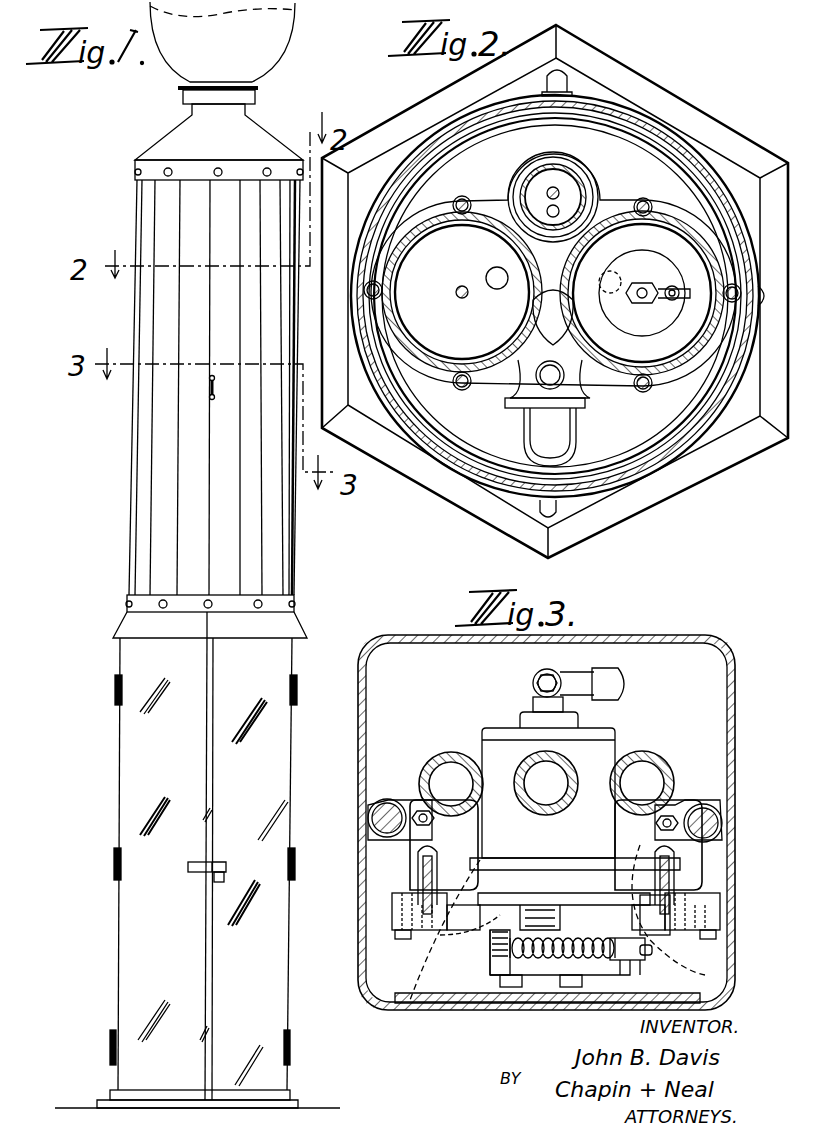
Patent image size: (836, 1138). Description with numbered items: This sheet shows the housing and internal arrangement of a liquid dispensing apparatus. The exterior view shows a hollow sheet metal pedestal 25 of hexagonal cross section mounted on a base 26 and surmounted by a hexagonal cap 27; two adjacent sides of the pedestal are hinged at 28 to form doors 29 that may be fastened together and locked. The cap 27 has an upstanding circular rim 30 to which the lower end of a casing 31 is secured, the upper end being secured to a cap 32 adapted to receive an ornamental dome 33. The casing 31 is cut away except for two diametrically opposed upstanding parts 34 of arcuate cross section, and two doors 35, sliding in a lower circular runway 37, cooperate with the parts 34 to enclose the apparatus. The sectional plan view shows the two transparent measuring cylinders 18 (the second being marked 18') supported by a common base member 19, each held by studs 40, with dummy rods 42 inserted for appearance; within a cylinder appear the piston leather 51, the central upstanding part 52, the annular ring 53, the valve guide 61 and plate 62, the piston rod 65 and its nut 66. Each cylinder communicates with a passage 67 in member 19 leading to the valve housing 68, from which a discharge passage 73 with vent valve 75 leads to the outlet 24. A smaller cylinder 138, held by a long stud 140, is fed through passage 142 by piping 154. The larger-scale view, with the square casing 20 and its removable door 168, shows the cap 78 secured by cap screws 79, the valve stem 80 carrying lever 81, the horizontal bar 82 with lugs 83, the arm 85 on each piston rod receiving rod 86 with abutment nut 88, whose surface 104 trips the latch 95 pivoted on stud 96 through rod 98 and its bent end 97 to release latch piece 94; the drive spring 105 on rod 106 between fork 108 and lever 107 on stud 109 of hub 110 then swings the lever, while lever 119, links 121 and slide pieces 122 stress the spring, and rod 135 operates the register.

In FIG. 2, the transparent measuring cylinder 18 is at (462, 292).
In FIG. 2, the right dial 18' is at (642, 277).
In FIG. 2, the base member 19 is at (490, 200).
In FIG. 3, the casing 20 is at (358, 968).
In FIG. 2, the outlet fitting 24 is at (575, 440).
In FIG. 1, the pedestal 25 is at (112, 791).
In FIG. 1, the base 26 is at (103, 1100).
In FIG. 1, the hexagonal cap 27 is at (133, 625).
In FIG. 2, the hexagonal cap 27 is at (452, 480).
In FIG. 1, the hinge 28 is at (116, 688).
In FIG. 1, the door 29 is at (213, 869).
In FIG. 2, the circular rim 30 is at (668, 480).
In FIG. 2, the casing 31 is at (632, 500).
In FIG. 1, the cap 32 is at (262, 132).
In FIG. 1, the ornamental dome 33 is at (297, 42).
In FIG. 2, the upstanding part 34 is at (398, 165).
In FIG. 1, the sliding door 35 is at (160, 460).
In FIG. 2, the sliding door 35 is at (598, 100).
In FIG. 2, the lower circular runway 37 is at (708, 465).
In FIG. 2, the stud 40 is at (460, 198).
In FIG. 2, the dummy rod 42 is at (382, 292).
In FIG. 2, the piston leather 51 is at (694, 292).
In FIG. 2, the central upstanding cylindrical part 52 is at (642, 293).
In FIG. 2, the annular ring 53 is at (648, 256).
In FIG. 2, the valve guide 61 is at (672, 300).
In FIG. 2, the plate 62 is at (647, 303).
In FIG. 2, the piston rod 65 is at (460, 300).
In FIG. 3, the piston rod 65 is at (412, 820).
In FIG. 2, the nut 66 is at (629, 303).
In FIG. 2, the passage 67 is at (497, 289).
In FIG. 3, the passage 67 is at (460, 785).
In FIG. 3, the valve housing 68 is at (612, 752).
In FIG. 3, the discharge passage 73 is at (543, 790).
In FIG. 2, the vent valve 75 is at (538, 385).
In FIG. 3, the cap 78 is at (612, 840).
In FIG. 3, the cap screw 79 is at (500, 895).
In FIG. 3, the valve stem 80 is at (540, 910).
In FIG. 3, the valve lever 81 is at (560, 905).
In FIG. 3, the horizontal bar 82 is at (444, 852).
In FIG. 3, the lug 83 is at (440, 930).
In FIG. 3, the arm 85 is at (368, 820).
In FIG. 3, the rod 86 is at (660, 826).
In FIG. 3, the abutment nut 88 is at (472, 868).
In FIG. 3, the latch piece 94 is at (557, 919).
In FIG. 3, the latch 95 is at (672, 910).
In FIG. 3, the stud 96 is at (410, 932).
In FIG. 3, the bent end 97 is at (420, 880).
In FIG. 3, the rod 98 is at (410, 875).
In FIG. 3, the surface 104 is at (372, 832).
In FIG. 3, the spring 105 is at (570, 988).
In FIG. 3, the rod 106 is at (440, 1003).
In FIG. 3, the lever 107 is at (500, 960).
In FIG. 3, the fork 108 is at (645, 965).
In FIG. 3, the stud 109 is at (525, 978).
In FIG. 3, the hub 110 is at (600, 905).
In FIG. 3, the lever 119 is at (415, 800).
In FIG. 3, the link 121 is at (390, 800).
In FIG. 3, the slide piece 122 is at (372, 808).
In FIG. 3, the rod 135 is at (470, 939).
In FIG. 2, the additional measuring cylinder 138 is at (592, 176).
In FIG. 2, the stud 140 is at (552, 186).
In FIG. 2, the passage 142 is at (560, 210).
In FIG. 3, the piping 154 is at (612, 683).
In FIG. 3, the removable door 168 is at (395, 1005).